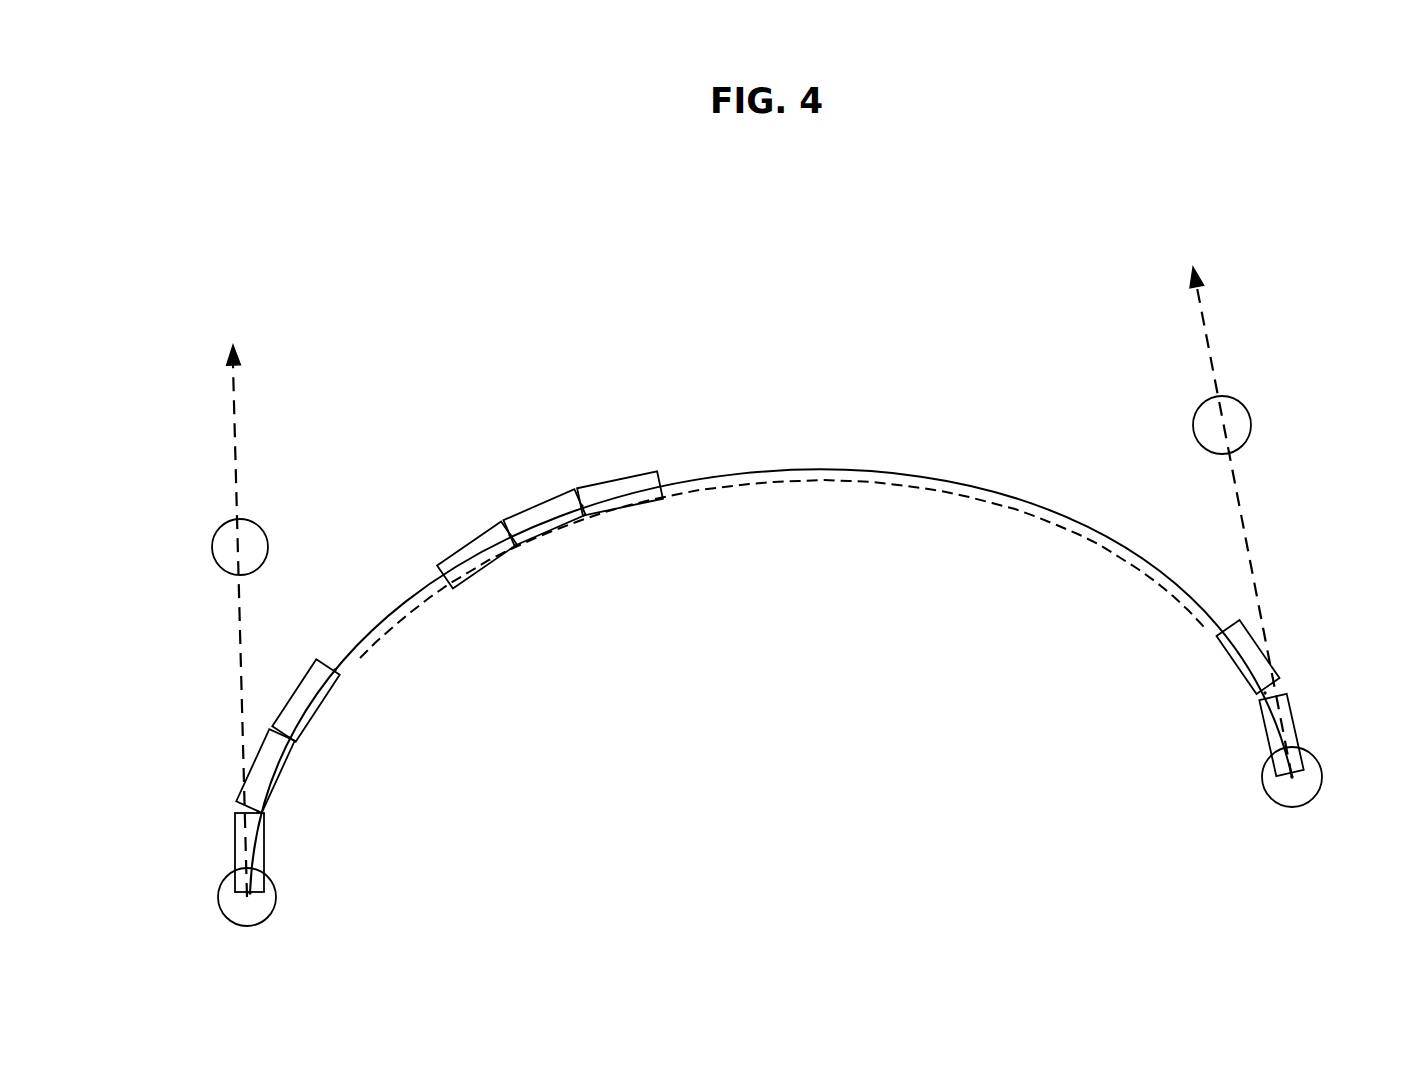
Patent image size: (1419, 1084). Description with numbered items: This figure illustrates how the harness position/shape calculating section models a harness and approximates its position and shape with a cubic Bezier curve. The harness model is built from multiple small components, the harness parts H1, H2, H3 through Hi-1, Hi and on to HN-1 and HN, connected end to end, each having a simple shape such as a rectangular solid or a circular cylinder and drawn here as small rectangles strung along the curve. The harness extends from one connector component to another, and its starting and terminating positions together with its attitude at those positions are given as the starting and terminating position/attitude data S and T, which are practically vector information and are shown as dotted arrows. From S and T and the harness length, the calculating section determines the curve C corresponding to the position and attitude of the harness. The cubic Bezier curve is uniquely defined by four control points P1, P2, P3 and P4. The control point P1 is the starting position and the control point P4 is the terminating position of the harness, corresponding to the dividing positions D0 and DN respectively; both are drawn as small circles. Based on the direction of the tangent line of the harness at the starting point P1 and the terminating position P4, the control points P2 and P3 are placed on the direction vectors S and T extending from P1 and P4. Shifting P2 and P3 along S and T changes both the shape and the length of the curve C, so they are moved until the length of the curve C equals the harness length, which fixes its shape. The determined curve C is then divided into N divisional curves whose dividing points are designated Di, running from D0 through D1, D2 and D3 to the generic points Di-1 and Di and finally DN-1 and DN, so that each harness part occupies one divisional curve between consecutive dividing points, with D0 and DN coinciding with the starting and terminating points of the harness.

The curve C is at (920, 477).
The starting position/attitude data S is at (242, 607).
The terminating position/attitude data T is at (1238, 503).
The control point P1 is at (224, 897).
The control point P2 is at (230, 530).
The control point P3 is at (1223, 406).
The control point P4 is at (1293, 796).
The harness part H1 is at (235, 852).
The harness part H2 is at (250, 767).
The harness part H3 is at (295, 692).
The harness part Hi-1 is at (475, 543).
The harness part Hi is at (545, 507).
The harness part HN-1 is at (1265, 652).
The harness part HN is at (1293, 728).
The dividing position D0 is at (265, 885).
The dividing point D1 is at (262, 810).
The dividing point D2 is at (283, 737).
The dividing point D3 is at (340, 667).
The dividing point Di-1 is at (513, 543).
The dividing point Di is at (587, 507).
The dividing point DN-1 is at (1270, 697).
The dividing position DN is at (1273, 757).